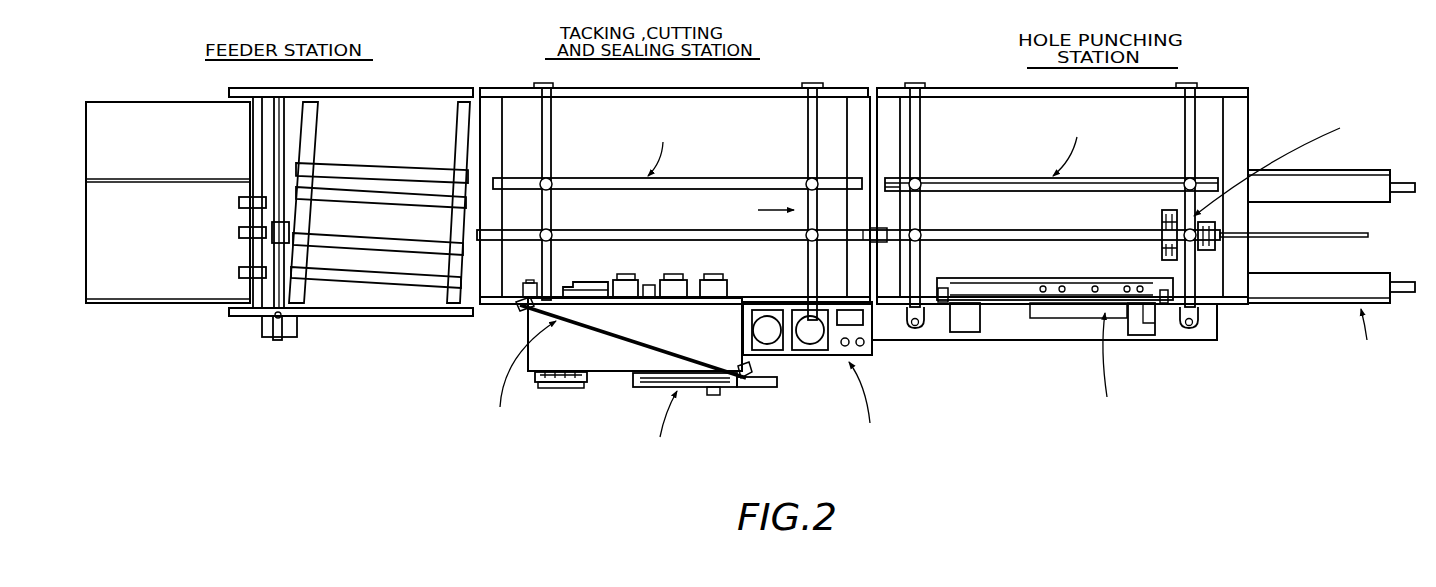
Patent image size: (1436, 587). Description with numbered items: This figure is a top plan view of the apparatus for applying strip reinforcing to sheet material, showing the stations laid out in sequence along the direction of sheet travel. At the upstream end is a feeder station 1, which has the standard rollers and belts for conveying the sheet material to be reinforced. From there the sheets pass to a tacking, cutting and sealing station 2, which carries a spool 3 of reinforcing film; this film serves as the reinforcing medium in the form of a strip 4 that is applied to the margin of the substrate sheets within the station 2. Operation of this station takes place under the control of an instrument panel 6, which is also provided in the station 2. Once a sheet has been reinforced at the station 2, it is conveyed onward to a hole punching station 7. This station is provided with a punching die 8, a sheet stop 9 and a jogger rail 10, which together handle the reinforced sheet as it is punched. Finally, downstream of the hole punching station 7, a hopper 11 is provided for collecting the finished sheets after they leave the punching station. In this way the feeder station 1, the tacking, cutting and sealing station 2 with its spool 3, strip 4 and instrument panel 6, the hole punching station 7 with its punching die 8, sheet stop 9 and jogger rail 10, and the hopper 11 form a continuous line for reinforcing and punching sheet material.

The feeder station 1 is at (342, 320).
The tacking, cutting and sealing station 2 is at (791, 86).
The spool 3 is at (760, 388).
The strip 4 is at (632, 345).
The instrument panel 6 is at (805, 357).
The hole punching station 7 is at (934, 85).
The punching die 8 is at (1060, 316).
The sheet stop 9 is at (1162, 213).
The jogger rail 10 is at (955, 173).
The hopper 11 is at (1373, 282).